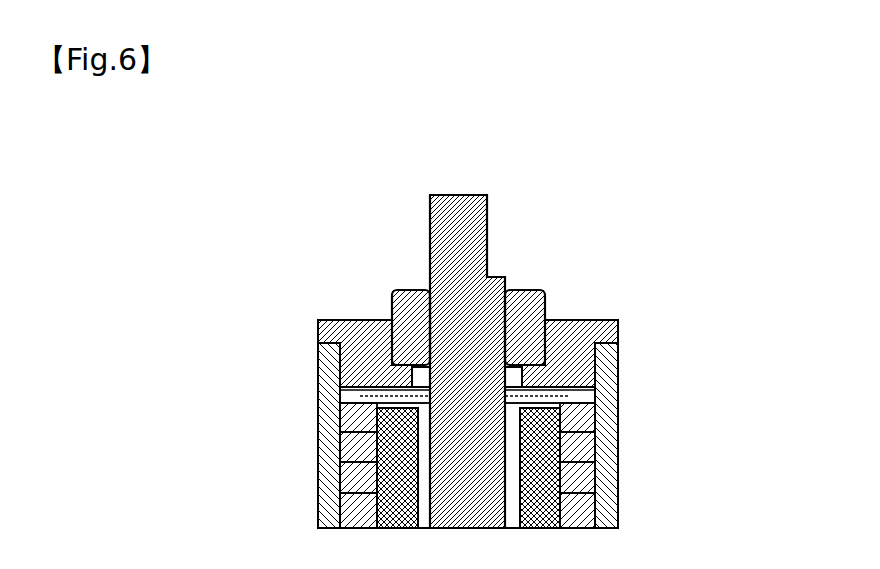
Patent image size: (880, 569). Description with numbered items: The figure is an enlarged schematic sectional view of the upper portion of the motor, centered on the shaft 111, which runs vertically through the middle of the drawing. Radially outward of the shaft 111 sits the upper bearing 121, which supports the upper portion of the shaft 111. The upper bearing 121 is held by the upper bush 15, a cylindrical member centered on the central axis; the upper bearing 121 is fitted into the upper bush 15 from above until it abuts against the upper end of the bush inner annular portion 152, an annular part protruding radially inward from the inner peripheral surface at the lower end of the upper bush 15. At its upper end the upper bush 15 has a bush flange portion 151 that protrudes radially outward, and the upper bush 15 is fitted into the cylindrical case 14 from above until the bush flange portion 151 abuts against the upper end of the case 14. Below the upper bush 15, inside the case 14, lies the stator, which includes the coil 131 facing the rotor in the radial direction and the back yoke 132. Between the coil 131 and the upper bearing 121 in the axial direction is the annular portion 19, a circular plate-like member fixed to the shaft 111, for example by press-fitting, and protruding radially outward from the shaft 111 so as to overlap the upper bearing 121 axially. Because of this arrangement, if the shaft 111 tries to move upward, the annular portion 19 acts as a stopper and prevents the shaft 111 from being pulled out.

The shaft 111 is at (440, 240).
The upper bush 15 is at (366, 320).
The bush flange portion 151 is at (318, 324).
The bush inner annular portion 152 is at (322, 385).
The upper bearing 121 is at (545, 297).
The annular portion 19 is at (596, 395).
The back yoke 132 is at (340, 457).
The coil 131 is at (577, 448).
The case 14 is at (318, 498).